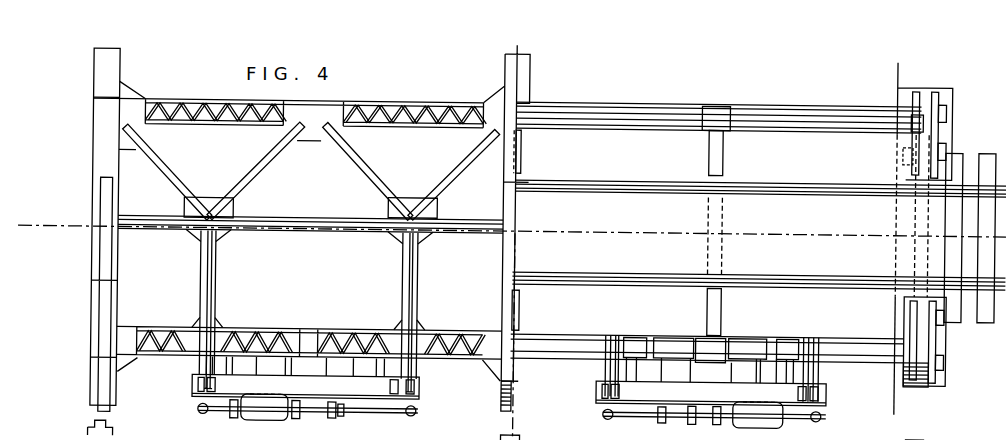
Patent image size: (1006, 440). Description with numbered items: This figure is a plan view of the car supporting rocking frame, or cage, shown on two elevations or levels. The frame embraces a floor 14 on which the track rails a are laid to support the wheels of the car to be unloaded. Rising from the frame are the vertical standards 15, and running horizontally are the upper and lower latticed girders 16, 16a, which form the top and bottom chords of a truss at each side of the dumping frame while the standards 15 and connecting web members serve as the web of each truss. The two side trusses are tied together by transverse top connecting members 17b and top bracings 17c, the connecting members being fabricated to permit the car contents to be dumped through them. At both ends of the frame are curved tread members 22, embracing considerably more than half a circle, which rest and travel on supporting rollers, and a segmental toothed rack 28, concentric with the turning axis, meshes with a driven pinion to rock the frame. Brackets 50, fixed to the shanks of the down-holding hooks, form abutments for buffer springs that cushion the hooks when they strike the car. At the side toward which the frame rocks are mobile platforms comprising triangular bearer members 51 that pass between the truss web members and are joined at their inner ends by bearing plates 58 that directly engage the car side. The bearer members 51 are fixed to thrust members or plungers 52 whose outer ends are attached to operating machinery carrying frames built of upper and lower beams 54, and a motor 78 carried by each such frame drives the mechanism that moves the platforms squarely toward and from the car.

The floor 14 is at (896, 237).
The vertical standards 15 is at (728, 110).
The upper latticed girder 16 is at (418, 103).
The lower latticed girder 16a is at (792, 118).
The transverse top connecting member 17b is at (347, 168).
The top bracing 17c is at (400, 283).
The curved tread members 22 is at (100, 263).
The segmental toothed gear or rack 28 is at (502, 419).
The brackets 50 is at (633, 342).
The bearer members 51 is at (675, 342).
The thrust members or plungers 52 is at (325, 369).
The upper and lower beams 54 is at (422, 387).
The bearing plates 58 is at (250, 332).
The motor 78 is at (263, 418).
The track rails a is at (822, 194).